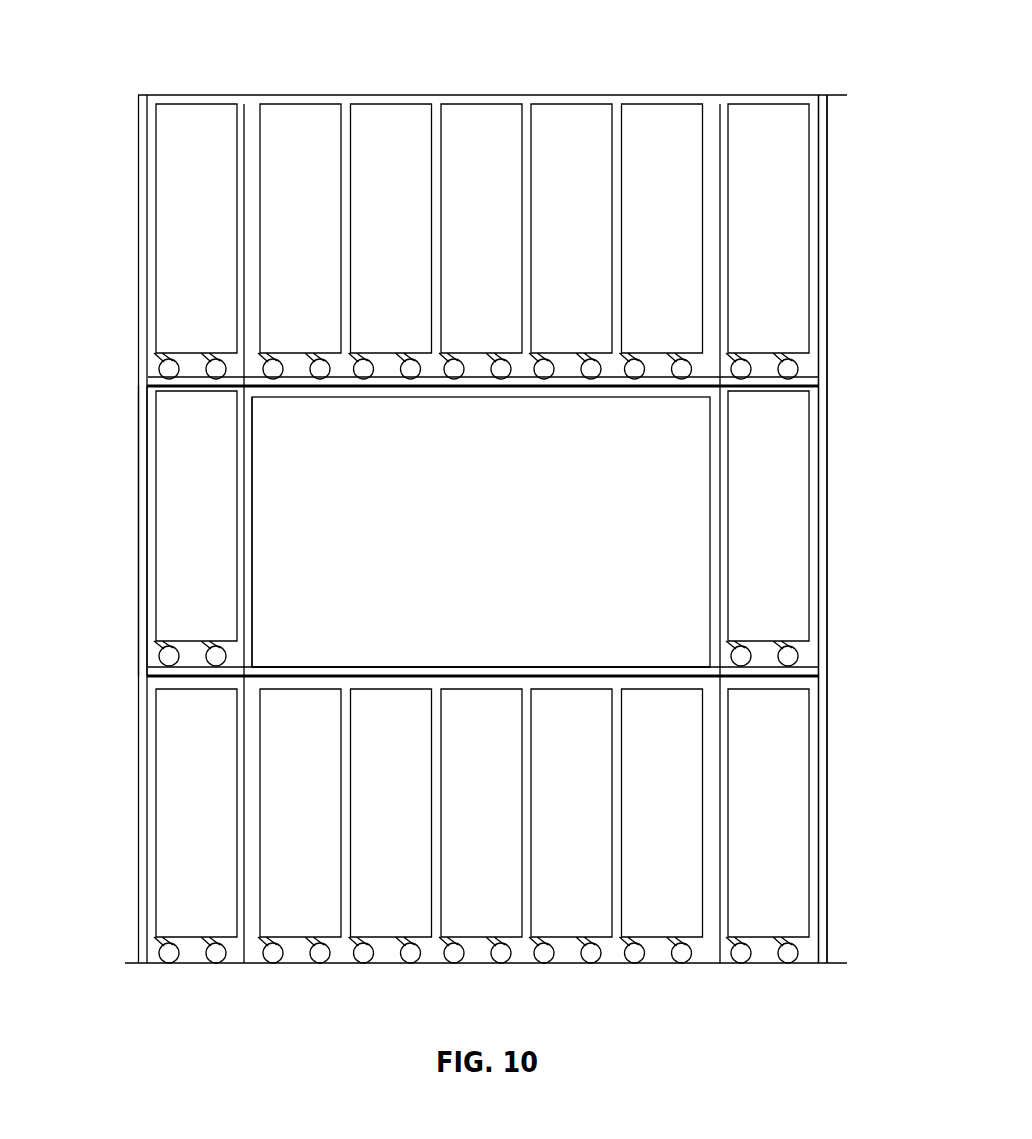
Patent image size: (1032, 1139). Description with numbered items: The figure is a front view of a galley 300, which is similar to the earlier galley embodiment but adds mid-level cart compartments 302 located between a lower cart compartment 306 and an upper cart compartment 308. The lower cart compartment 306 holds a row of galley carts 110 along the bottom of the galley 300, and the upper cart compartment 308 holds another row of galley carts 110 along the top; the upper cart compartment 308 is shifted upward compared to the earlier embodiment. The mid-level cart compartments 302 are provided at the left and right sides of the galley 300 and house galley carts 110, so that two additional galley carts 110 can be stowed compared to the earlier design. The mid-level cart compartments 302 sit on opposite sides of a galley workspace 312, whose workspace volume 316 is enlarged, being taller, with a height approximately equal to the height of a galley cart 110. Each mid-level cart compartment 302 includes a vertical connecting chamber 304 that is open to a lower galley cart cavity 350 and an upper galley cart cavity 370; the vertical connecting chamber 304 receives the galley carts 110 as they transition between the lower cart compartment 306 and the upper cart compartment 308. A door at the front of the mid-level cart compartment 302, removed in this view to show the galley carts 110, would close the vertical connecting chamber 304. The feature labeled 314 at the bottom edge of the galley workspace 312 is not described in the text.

The galley 300 is at (608, 50).
The galley cart 110 is at (783, 205).
The upper cart compartment 308 is at (815, 280).
The upper galley cart cavity 370 is at (148, 302).
The vertical connecting chamber 304 is at (130, 431).
The workspace volume 316 is at (657, 491).
The galley workspace 312 is at (290, 507).
The mid-level cart compartment 302 is at (135, 590).
The bottom edge of central compartment 314 is at (347, 666).
The lower cart compartment 306 is at (815, 738).
The lower galley cart cavity 350 is at (148, 888).